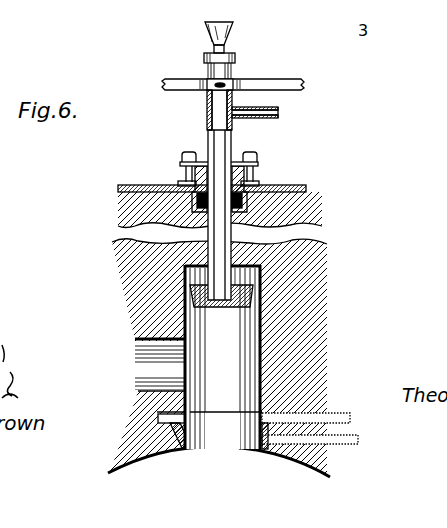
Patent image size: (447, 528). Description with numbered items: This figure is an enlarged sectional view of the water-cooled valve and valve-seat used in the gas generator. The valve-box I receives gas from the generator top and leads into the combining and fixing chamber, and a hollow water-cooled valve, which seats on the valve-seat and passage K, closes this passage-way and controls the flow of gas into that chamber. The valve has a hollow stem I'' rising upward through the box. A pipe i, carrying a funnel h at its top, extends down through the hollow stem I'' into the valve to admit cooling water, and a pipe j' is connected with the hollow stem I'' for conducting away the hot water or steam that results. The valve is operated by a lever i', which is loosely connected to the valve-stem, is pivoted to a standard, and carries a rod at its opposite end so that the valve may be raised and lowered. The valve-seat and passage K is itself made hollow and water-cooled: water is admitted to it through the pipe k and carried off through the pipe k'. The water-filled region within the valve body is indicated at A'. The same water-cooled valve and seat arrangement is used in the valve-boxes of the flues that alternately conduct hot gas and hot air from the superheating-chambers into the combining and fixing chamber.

The funnel h is at (223, 22).
The pipe i is at (212, 51).
The lever i' is at (232, 73).
The hollow stem I'' is at (206, 111).
The pipe j' is at (255, 125).
The cup A' is at (235, 296).
The valve-box I is at (222, 357).
The valve-seat and passage K is at (226, 430).
The pipe k' is at (317, 409).
The pipe k is at (325, 449).